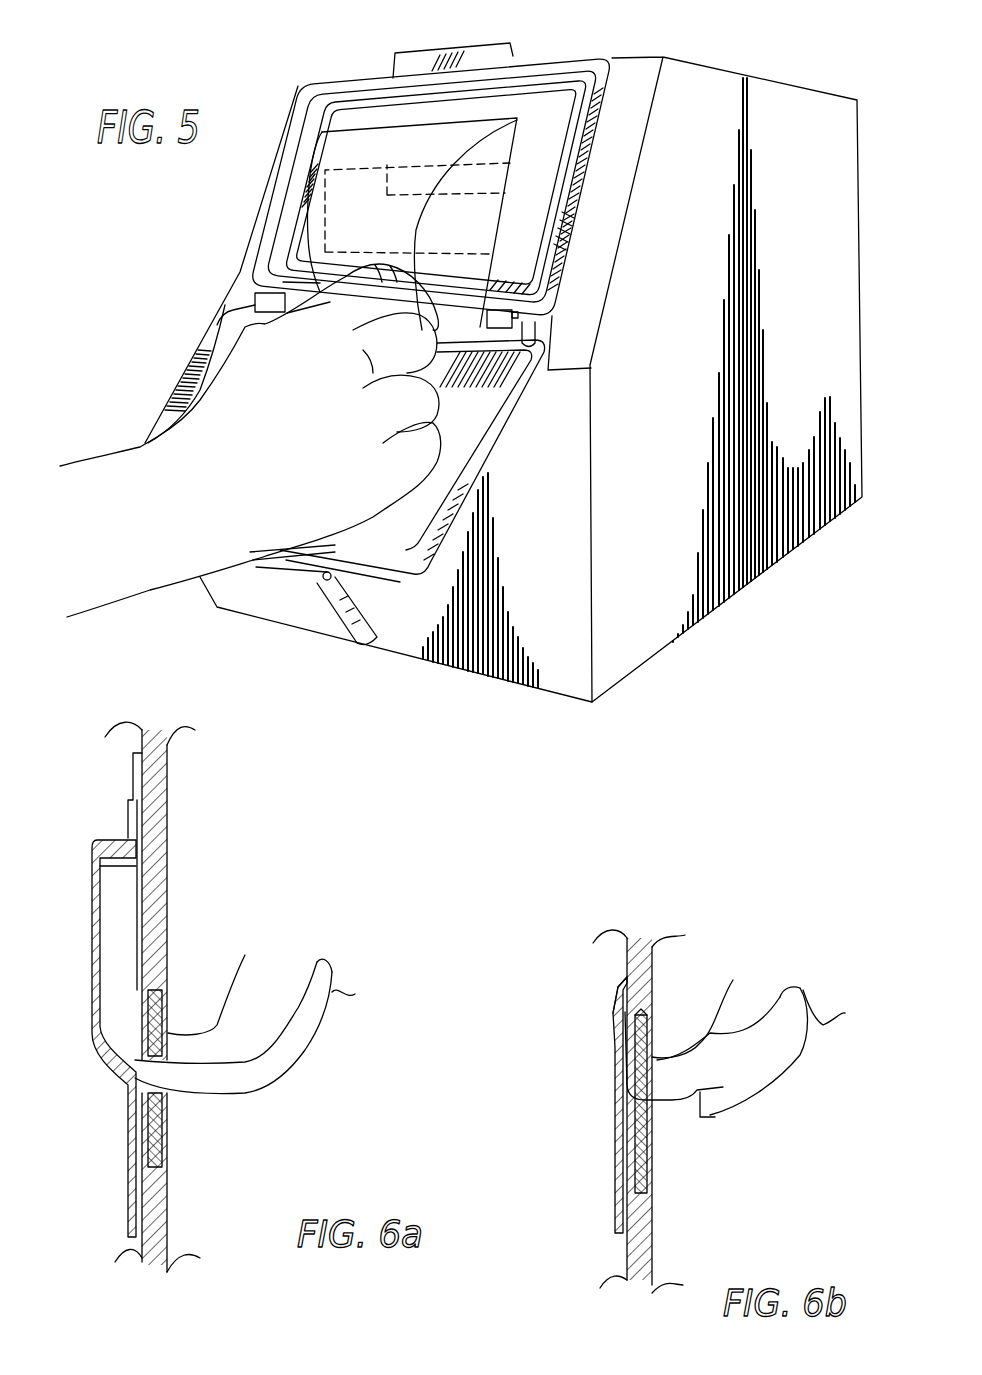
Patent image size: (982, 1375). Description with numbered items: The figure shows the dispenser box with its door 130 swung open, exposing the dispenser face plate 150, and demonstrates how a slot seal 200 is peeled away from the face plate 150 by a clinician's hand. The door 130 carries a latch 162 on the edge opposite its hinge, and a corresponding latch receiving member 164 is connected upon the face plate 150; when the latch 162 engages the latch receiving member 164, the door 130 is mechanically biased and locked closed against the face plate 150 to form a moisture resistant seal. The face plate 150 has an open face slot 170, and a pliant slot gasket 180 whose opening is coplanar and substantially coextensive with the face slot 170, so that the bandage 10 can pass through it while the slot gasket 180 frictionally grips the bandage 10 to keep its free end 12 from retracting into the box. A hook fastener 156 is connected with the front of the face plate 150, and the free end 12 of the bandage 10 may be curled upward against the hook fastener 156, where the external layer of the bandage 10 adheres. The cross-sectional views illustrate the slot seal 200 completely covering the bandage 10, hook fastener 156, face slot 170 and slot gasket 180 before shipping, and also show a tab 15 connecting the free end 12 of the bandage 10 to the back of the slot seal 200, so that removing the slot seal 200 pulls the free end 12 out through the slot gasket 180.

In FIG. 6A, the bandage 10 is at (312, 1013).
In FIG. 6B, the bandage 10 is at (800, 1035).
In FIG. 5, the free end 12 is at (528, 172).
In FIG. 6A, the free end 12 is at (128, 866).
In FIG. 6B, the free end 12 is at (710, 1110).
In FIG. 6B, the tab 15 is at (615, 1025).
In FIG. 5, the door 130 is at (387, 530).
In FIG. 5, the dispenser face plate 150 is at (612, 101).
In FIG. 6A, the dispenser face plate 150 is at (157, 827).
In FIG. 6B, the dispenser face plate 150 is at (627, 960).
In FIG. 6A, the hook fastener 156 is at (137, 890).
In FIG. 5, the latch 162 is at (283, 603).
In FIG. 5, the latch receiving member 164 is at (513, 50).
In FIG. 5, the face slot 170 is at (527, 242).
In FIG. 6A, the face slot 170 is at (217, 979).
In FIG. 6B, the face slot 170 is at (703, 1003).
In FIG. 5, the slot gasket 180 is at (527, 267).
In FIG. 6A, the slot gasket 180 is at (157, 1110).
In FIG. 6B, the slot gasket 180 is at (645, 1138).
In FIG. 5, the slot seal 200 is at (348, 142).
In FIG. 6A, the slot seal 200 is at (128, 1152).
In FIG. 6B, the slot seal 200 is at (613, 1073).